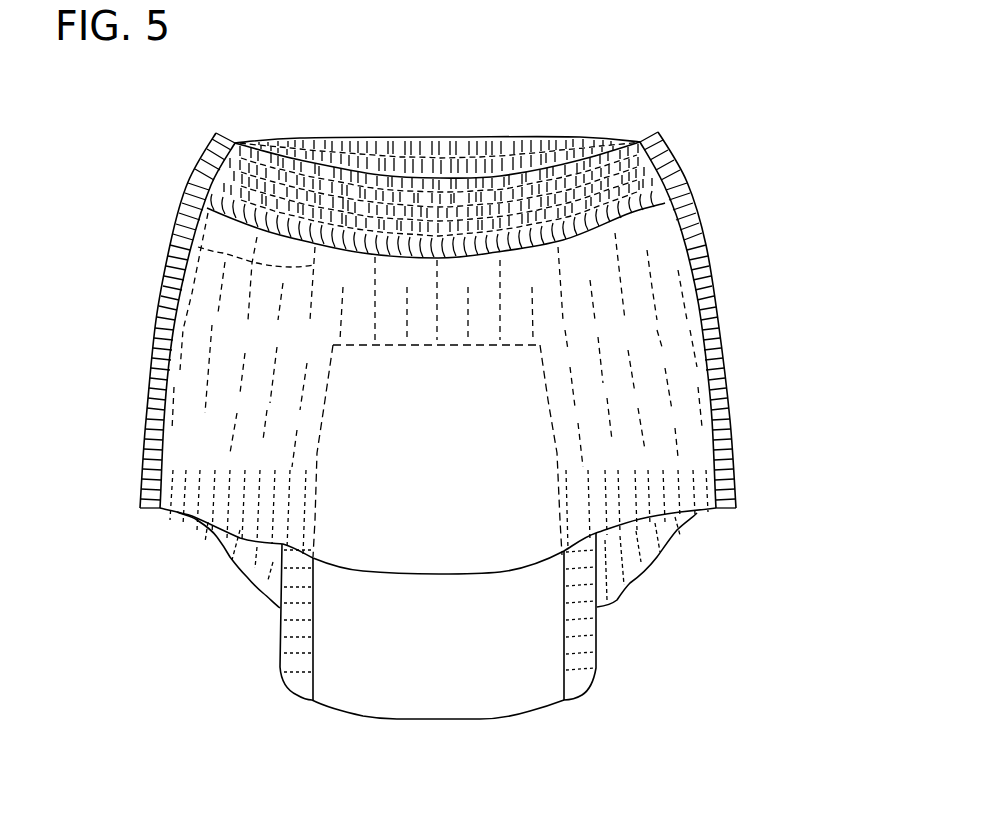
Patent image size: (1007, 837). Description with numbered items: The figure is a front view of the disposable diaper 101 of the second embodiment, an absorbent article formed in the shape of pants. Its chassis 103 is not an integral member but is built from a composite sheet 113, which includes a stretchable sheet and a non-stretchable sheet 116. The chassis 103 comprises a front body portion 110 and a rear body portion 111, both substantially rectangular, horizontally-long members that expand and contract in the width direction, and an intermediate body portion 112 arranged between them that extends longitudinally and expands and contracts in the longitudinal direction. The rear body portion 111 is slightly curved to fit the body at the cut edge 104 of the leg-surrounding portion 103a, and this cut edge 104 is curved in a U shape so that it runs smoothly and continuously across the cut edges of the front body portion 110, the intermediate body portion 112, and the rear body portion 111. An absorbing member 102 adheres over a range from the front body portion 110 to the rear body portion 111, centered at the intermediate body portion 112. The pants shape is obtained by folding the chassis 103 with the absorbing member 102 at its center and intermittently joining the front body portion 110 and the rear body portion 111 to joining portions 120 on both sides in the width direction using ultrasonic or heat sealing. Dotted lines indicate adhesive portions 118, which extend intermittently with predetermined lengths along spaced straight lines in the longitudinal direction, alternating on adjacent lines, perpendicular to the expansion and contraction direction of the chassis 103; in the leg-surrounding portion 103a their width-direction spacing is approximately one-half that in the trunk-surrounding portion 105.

The disposable diaper 101 is at (608, 111).
The absorbing member 102 is at (445, 698).
The chassis 103 is at (728, 335).
The leg-surrounding portion 103a is at (650, 582).
The cut edge 104 is at (645, 521).
The trunk-surrounding portion 105 is at (215, 393).
The front body portion 110 is at (650, 257).
The rear body portion 111 is at (438, 135).
The intermediate body portion 112 is at (583, 677).
The composite sheet 113 is at (688, 405).
The non-stretchable sheet 116 is at (200, 343).
The adhesive portions 118 is at (205, 250).
The joining portions 120 is at (170, 290).